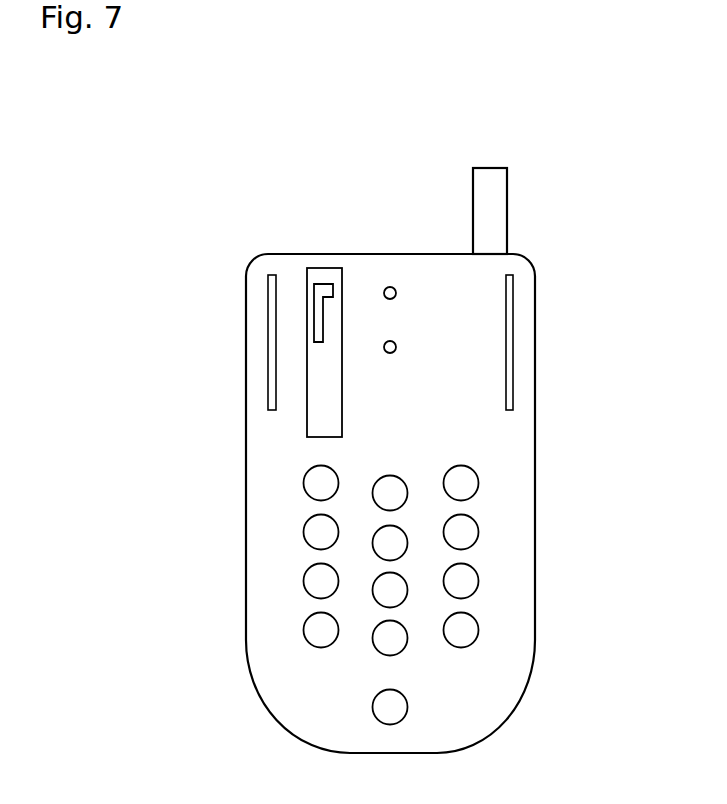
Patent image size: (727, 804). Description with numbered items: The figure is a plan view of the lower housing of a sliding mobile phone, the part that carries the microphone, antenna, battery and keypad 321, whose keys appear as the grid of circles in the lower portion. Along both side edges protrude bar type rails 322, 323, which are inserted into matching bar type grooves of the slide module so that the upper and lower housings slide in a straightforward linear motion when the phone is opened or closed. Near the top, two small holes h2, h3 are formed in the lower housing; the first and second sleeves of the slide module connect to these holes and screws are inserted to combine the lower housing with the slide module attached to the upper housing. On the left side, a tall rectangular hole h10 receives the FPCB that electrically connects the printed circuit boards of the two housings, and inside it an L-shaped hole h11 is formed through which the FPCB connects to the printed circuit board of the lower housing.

The keypad 321 is at (475, 572).
The bar type rail 322 is at (513, 350).
The bar type rail 323 is at (268, 355).
The hole h10 is at (313, 423).
The L-shaped hole h11 is at (320, 283).
The hole h2 is at (390, 287).
The hole h3 is at (392, 341).